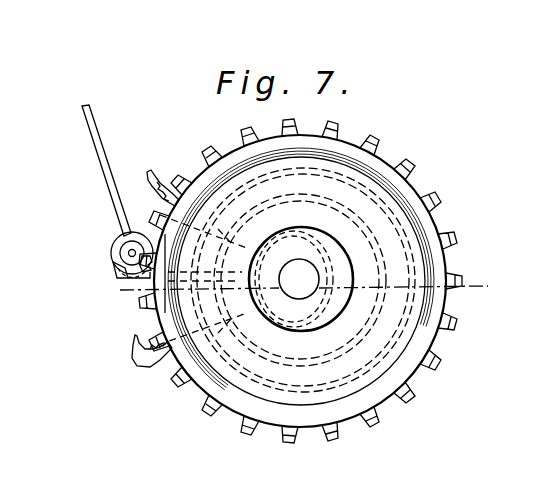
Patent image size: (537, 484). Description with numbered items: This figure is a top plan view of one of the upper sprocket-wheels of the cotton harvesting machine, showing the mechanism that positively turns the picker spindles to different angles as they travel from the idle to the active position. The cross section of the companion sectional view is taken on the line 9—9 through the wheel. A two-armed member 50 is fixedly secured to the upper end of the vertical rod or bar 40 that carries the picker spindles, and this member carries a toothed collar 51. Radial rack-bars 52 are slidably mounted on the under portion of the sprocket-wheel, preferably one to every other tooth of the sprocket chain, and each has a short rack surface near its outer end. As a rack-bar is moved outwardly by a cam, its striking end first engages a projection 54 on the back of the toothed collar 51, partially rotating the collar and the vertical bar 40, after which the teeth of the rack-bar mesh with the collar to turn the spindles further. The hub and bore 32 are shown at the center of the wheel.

The section line 9— 9 is at (301, 292).
The hub 32 is at (303, 290).
The vertical rod or bar 40 is at (112, 247).
The two-armed member 50 is at (165, 279).
The toothed collar 51 is at (113, 256).
The radial rack-bars 52 is at (134, 352).
The projection 54 is at (123, 239).